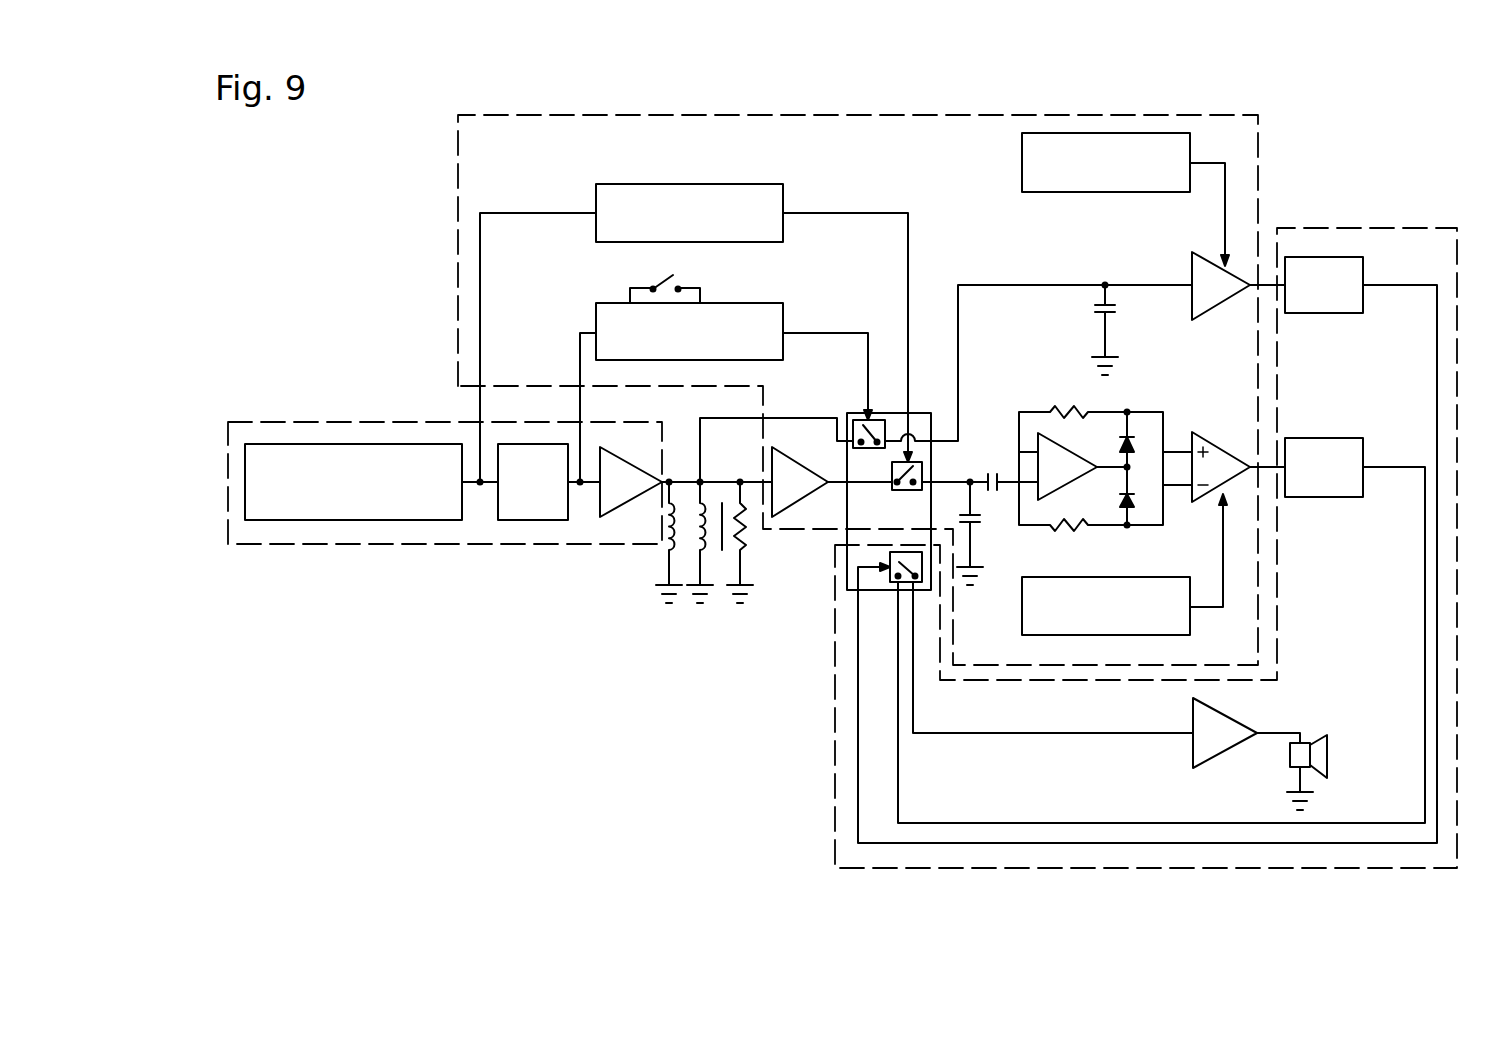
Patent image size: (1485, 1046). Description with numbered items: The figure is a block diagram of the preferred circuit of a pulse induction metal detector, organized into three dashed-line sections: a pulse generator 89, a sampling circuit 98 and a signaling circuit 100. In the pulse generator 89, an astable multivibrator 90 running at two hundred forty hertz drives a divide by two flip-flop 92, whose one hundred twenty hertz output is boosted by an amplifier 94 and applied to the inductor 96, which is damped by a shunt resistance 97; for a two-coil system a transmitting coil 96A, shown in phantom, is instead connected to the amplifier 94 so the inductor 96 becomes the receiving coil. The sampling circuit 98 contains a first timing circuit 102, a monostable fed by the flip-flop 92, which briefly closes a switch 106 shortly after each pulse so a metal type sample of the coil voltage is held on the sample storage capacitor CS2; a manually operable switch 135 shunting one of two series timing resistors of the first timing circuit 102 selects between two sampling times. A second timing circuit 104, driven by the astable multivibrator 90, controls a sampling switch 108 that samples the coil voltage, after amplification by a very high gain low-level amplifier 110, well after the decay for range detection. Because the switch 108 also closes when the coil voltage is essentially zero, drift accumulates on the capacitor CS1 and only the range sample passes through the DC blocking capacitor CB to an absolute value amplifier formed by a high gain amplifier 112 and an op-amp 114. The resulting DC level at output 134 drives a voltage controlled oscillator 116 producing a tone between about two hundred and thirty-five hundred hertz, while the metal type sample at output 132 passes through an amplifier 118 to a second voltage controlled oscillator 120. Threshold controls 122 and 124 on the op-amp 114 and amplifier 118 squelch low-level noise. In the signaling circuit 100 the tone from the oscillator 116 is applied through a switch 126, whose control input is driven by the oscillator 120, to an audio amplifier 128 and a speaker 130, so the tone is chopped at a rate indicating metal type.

The pulse generator 89 is at (332, 422).
The astable multivibrator 90 is at (258, 515).
The divide by two flip-flop 92 is at (507, 517).
The amplifier 94 is at (598, 503).
The inductor 96 is at (707, 553).
The transmitting coil 96A is at (672, 537).
The shunt resistance 97 is at (745, 543).
The sampling circuit 98 is at (458, 236).
The signaling circuit 100 is at (836, 738).
The first timing circuit 102 is at (602, 312).
The second timing circuit 104 is at (602, 197).
The switch 106 is at (866, 418).
The sampling switch 108 is at (890, 467).
The low-level amplifier 110 is at (787, 497).
The high gain amplifier 112 is at (1048, 428).
The op-amp 114 is at (1227, 443).
The voltage controlled oscillator 116 is at (1335, 438).
The amplifier 118 is at (1192, 253).
The second voltage controlled oscillator 120 is at (1367, 300).
The threshold control 122 is at (1087, 577).
The threshold control 124 is at (1037, 192).
The switch 126 is at (888, 587).
The audio amplifier 128 is at (1190, 753).
The speaker 130 is at (1319, 738).
The output 132 is at (1268, 280).
The output 134 is at (1267, 470).
The manually operable switch 135 is at (663, 282).
The DC blocking capacitor CB is at (994, 469).
The capacitor CS1 is at (990, 533).
The sample storage capacitor CS2 is at (1127, 330).